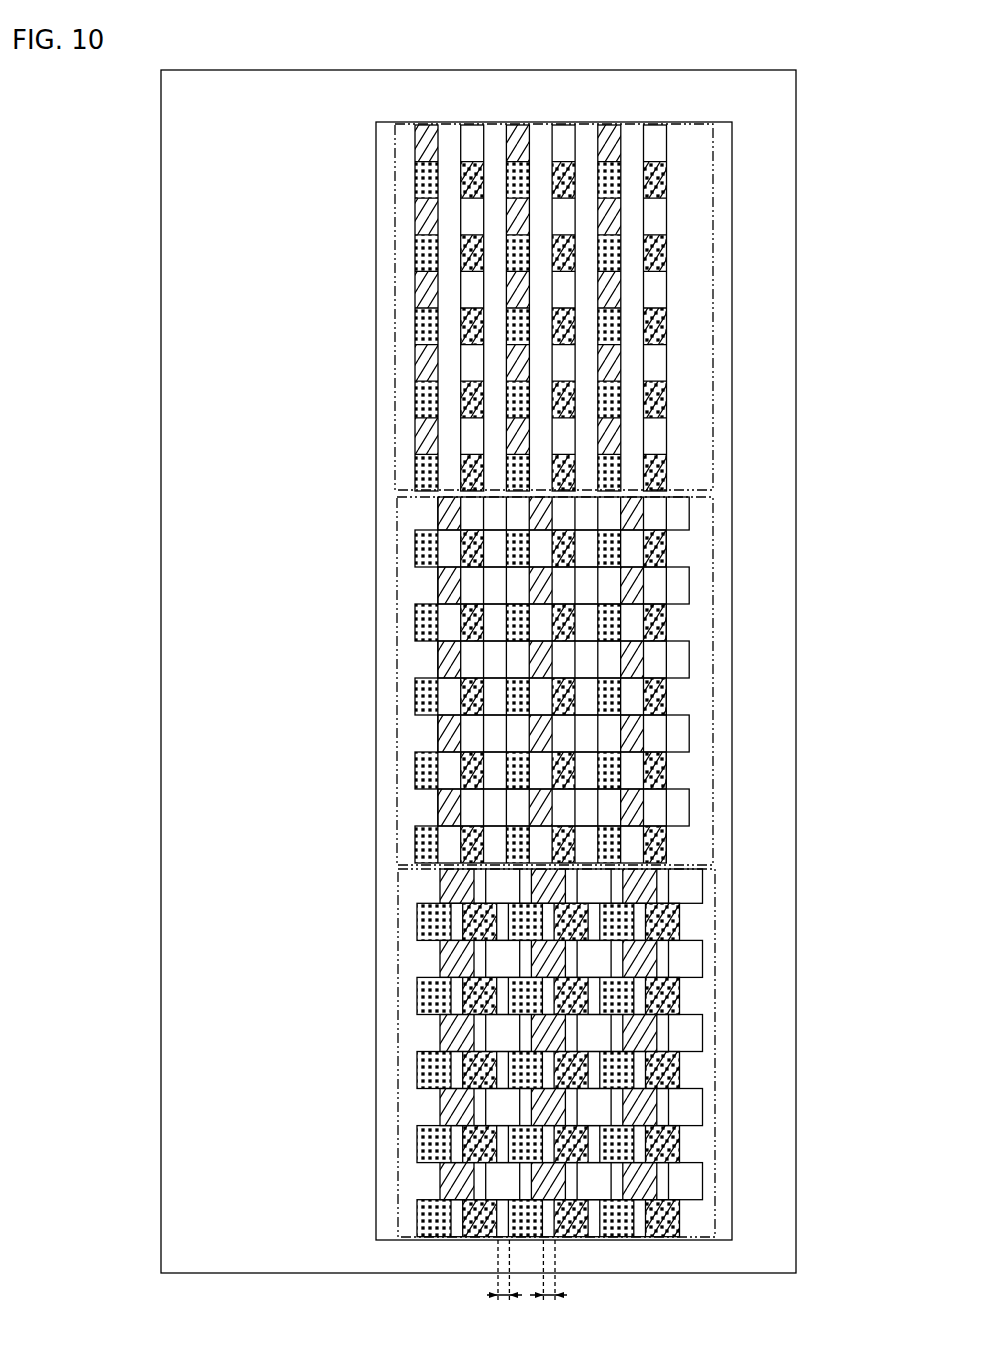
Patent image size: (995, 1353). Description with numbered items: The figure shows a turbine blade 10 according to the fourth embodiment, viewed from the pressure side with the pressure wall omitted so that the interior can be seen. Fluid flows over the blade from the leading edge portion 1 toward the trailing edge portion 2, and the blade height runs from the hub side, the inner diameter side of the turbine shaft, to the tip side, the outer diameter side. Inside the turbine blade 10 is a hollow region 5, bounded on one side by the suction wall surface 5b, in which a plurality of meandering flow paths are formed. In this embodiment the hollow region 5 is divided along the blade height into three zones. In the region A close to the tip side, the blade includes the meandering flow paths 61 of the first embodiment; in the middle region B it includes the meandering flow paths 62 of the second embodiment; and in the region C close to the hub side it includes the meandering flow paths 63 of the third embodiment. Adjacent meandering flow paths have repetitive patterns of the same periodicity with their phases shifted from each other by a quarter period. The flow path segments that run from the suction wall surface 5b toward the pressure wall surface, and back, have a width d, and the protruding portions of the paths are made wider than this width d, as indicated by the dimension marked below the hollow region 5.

The turbine blade 10 is at (810, 172).
The leading edge portion 1 is at (160, 472).
The trailing edge portion 2 is at (797, 402).
The hollow region 5 is at (402, 978).
The suction wall surface 5b is at (400, 1110).
The meandering flow paths 61 is at (652, 358).
The meandering flow paths 62 is at (652, 740).
The meandering flow paths 63 is at (654, 1110).
The region A is at (712, 264).
The middle region B is at (713, 632).
The region C is at (715, 992).
The width of a flow path d is at (527, 1284).